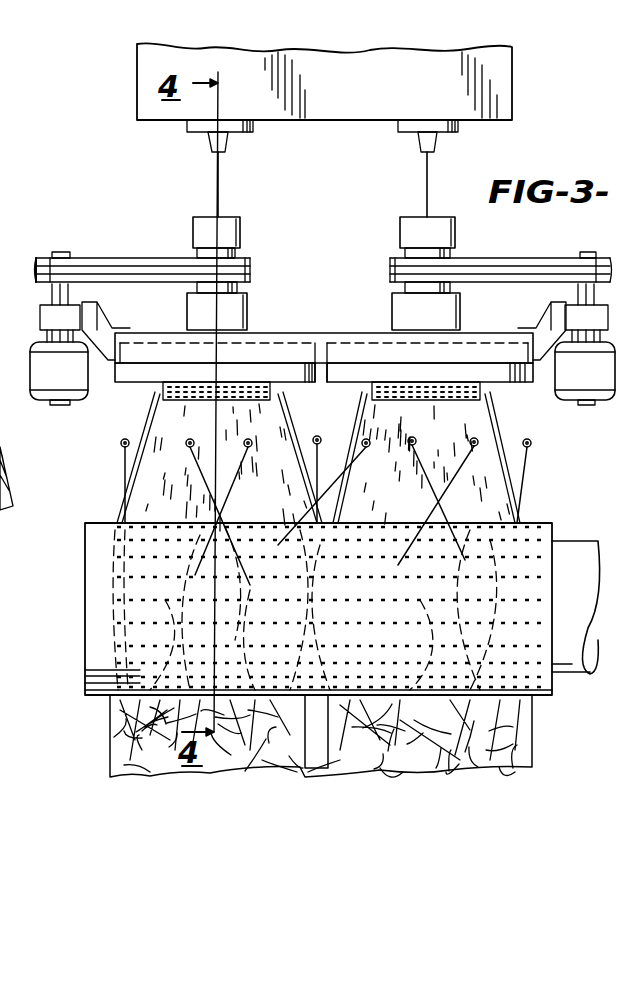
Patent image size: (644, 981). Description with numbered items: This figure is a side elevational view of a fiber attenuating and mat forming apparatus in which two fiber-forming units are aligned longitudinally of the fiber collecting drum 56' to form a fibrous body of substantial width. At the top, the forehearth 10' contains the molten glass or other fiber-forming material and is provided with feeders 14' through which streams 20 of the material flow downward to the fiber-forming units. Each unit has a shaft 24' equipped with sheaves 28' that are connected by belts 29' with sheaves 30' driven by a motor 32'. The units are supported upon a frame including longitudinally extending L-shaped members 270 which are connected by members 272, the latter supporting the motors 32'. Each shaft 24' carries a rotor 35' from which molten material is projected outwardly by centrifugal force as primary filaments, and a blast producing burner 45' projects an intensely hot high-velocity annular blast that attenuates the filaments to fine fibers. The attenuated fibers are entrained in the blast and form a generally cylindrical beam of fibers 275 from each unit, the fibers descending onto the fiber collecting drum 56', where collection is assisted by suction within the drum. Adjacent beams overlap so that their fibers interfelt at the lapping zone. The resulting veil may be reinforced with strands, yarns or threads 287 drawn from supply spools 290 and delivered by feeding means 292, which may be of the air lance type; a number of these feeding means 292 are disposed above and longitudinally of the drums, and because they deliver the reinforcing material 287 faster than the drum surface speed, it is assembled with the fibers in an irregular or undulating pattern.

The forehearth 10' is at (330, 70).
The feeder 14' is at (345, 140).
The stream 20 is at (218, 175).
The sheave 28' is at (348, 255).
The belt 29' is at (323, 258).
The sheave 30' is at (24, 255).
The shaft 24' is at (323, 311).
The member 272 is at (95, 306).
The L-shaped member 270 is at (178, 328).
The motor 32' is at (322, 359).
The burner 45' is at (320, 388).
The rotor 35' is at (321, 408).
The beam of fibers 275 is at (156, 432).
The feeding means 292 is at (531, 443).
The supply spool 290 is at (9, 478).
The fiber collecting drum 56' is at (344, 599).
The reinforcing material 287 is at (312, 765).